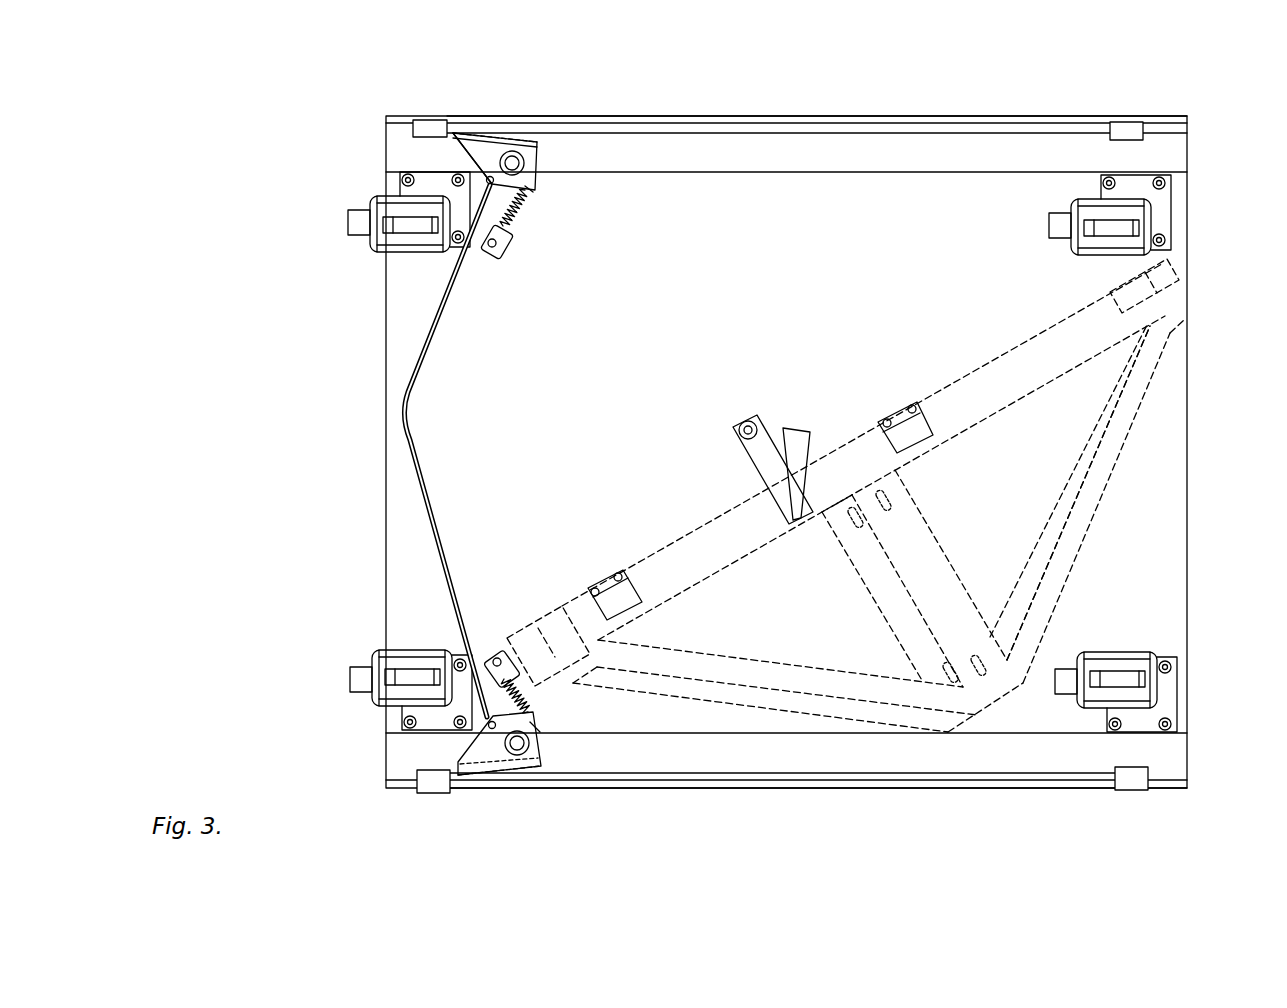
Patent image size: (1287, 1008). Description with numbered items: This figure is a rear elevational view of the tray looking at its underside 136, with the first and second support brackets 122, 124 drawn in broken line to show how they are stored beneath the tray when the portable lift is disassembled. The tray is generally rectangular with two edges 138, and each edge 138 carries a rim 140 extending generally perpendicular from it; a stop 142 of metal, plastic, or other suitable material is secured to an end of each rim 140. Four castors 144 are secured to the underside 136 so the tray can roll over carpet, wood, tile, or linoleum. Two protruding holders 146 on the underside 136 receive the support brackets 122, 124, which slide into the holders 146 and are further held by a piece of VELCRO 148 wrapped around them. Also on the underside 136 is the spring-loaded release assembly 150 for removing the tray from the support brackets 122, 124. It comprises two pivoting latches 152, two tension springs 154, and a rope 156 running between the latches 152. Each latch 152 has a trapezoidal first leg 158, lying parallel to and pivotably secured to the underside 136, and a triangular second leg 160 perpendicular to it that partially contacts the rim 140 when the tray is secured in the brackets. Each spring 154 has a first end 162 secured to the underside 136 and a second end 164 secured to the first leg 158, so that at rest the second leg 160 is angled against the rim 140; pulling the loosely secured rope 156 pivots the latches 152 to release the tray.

The first support bracket 122 is at (877, 570).
The second support bracket 124 is at (935, 598).
The underside 136 is at (938, 188).
The edge 138 is at (792, 110).
The rim 140 is at (1047, 125).
The stop 142 is at (386, 114).
The castor 144 is at (1143, 211).
The protruding holder 146 is at (920, 422).
The piece of VELCRO 148 is at (760, 440).
The spring-loaded release assembly 150 is at (507, 282).
The pivoting latch 152 is at (487, 157).
The tension spring 154 is at (520, 213).
The rope 156 is at (420, 432).
The first leg 158 is at (528, 160).
The second leg 160 is at (510, 140).
The first end 162 is at (516, 247).
The second end 164 is at (538, 194).